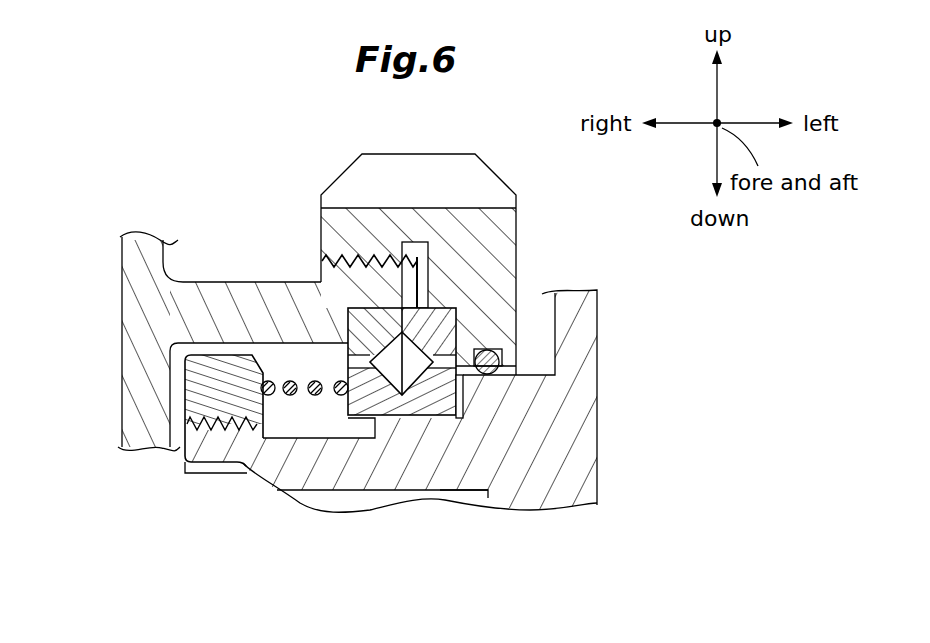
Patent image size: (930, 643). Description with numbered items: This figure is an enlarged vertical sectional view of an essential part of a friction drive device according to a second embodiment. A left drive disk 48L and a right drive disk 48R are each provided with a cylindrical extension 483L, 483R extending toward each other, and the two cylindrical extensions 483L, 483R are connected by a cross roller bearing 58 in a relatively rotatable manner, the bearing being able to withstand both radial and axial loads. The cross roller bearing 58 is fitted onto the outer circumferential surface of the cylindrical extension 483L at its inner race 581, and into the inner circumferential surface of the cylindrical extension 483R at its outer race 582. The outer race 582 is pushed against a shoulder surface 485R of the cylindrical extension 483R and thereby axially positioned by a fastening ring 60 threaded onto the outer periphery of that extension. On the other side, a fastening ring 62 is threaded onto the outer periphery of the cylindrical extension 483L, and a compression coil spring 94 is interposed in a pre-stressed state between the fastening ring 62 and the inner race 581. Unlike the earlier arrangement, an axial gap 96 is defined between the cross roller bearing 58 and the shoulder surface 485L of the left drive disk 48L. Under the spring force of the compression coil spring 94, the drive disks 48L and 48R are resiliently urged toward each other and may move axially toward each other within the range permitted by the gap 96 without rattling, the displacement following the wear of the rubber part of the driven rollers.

The right drive disk 48R is at (127, 395).
The left drive disk 48L is at (597, 412).
The fastening ring 60 is at (508, 225).
The cross roller bearing 58 is at (457, 342).
The outer race 582 is at (383, 313).
The shoulder surface 485R is at (355, 332).
The shoulder surface 485L is at (442, 392).
The inner race 581 is at (366, 413).
The cylindrical extension 483R is at (362, 276).
The cylindrical extension 483L is at (473, 482).
The compression coil spring 94 is at (290, 395).
The fastening ring 62 is at (220, 412).
The axial gap 96 is at (460, 405).